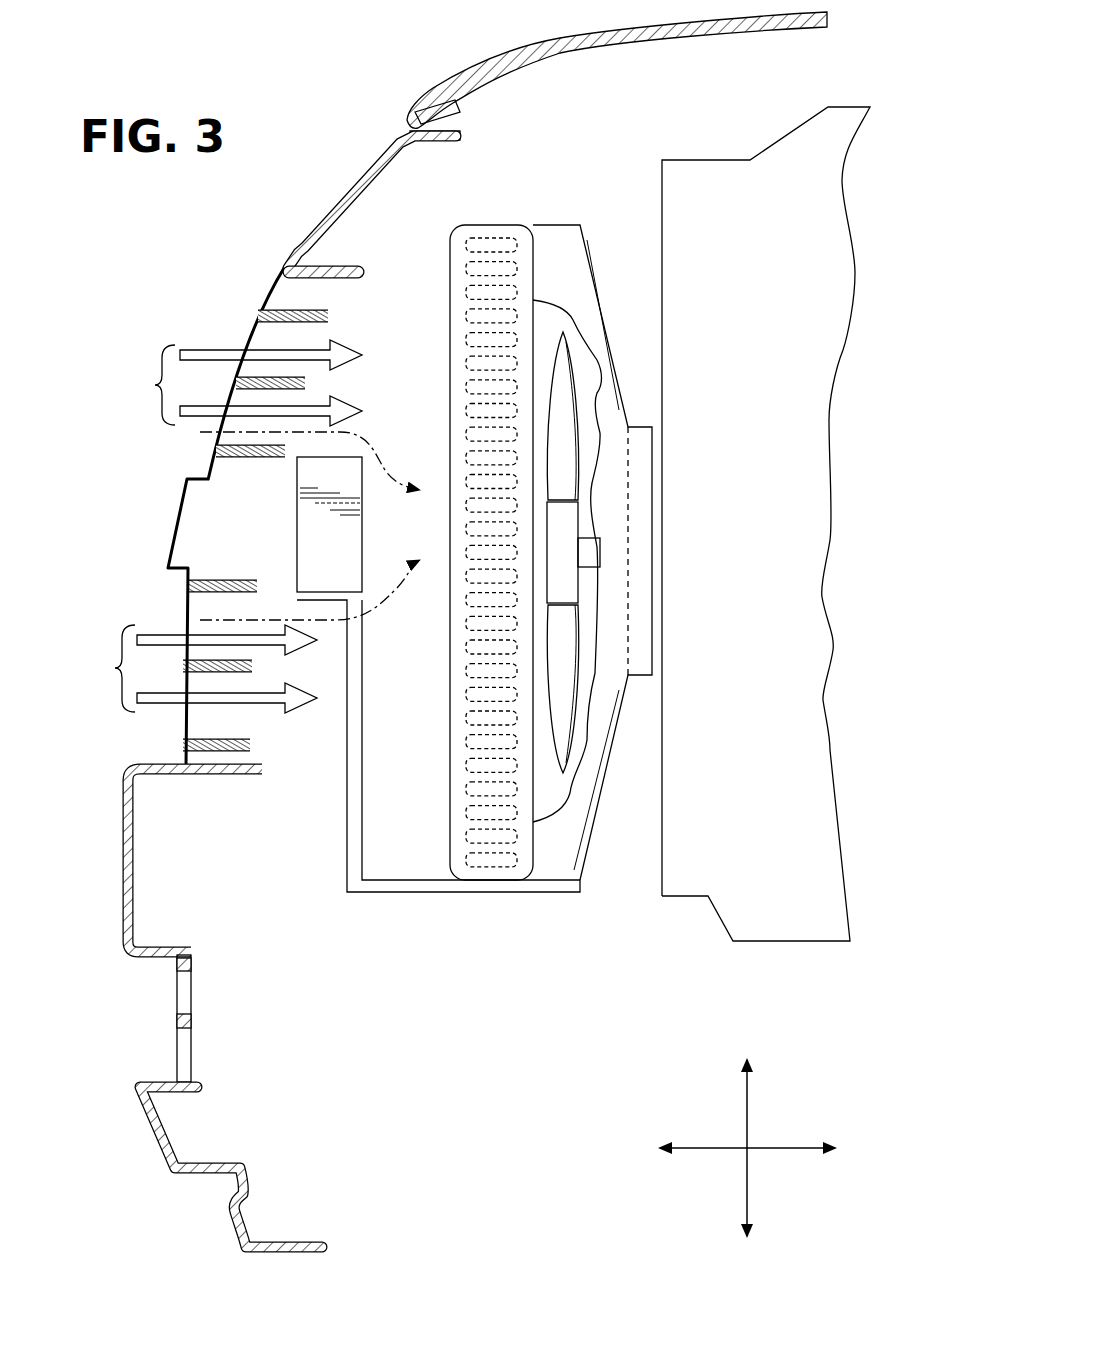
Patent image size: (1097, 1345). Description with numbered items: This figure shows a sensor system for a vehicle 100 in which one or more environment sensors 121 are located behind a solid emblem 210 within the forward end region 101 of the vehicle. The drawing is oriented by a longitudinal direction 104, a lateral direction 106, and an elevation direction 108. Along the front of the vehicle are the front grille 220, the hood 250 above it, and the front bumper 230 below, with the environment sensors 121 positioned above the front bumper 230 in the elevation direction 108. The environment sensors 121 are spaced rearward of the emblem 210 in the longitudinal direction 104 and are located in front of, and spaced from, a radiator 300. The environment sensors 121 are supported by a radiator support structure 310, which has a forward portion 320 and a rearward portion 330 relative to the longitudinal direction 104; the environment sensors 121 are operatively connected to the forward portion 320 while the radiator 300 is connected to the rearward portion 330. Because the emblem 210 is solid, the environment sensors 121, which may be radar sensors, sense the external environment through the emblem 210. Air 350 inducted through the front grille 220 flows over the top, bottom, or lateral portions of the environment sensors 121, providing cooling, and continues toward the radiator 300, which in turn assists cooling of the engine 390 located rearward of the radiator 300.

The vehicle 100 is at (318, 115).
The forward end region 101 is at (98, 298).
The longitudinal direction 104 is at (705, 1148).
The lateral direction 106 is at (748, 1150).
The elevation direction 108 is at (747, 1190).
The environment sensors 121 is at (297, 508).
The emblem 210 is at (172, 505).
The front grille 220 is at (238, 321).
The front bumper 230 is at (120, 815).
The hood 250 is at (453, 70).
The radiator 300 is at (522, 190).
The radiator support structure 310 is at (415, 893).
The forward portion 320 is at (295, 596).
The rearward portion 330 is at (512, 915).
The air 350 is at (218, 526).
The engine 390 is at (790, 972).